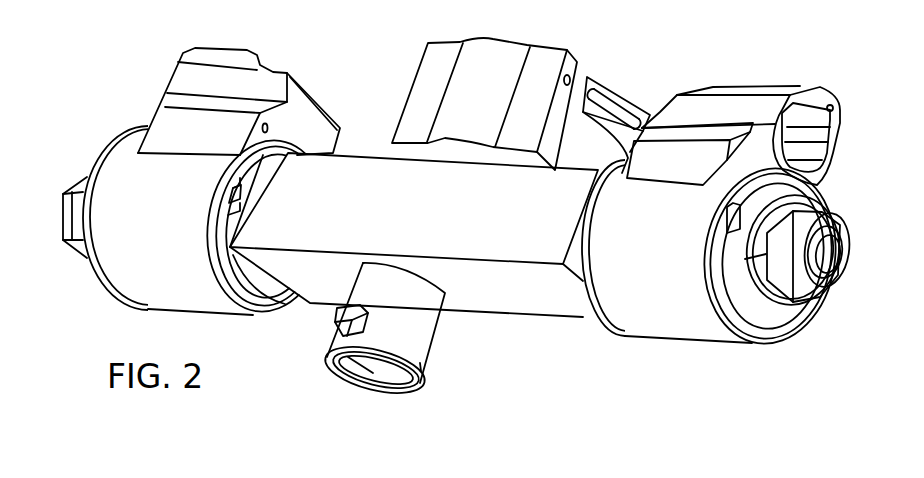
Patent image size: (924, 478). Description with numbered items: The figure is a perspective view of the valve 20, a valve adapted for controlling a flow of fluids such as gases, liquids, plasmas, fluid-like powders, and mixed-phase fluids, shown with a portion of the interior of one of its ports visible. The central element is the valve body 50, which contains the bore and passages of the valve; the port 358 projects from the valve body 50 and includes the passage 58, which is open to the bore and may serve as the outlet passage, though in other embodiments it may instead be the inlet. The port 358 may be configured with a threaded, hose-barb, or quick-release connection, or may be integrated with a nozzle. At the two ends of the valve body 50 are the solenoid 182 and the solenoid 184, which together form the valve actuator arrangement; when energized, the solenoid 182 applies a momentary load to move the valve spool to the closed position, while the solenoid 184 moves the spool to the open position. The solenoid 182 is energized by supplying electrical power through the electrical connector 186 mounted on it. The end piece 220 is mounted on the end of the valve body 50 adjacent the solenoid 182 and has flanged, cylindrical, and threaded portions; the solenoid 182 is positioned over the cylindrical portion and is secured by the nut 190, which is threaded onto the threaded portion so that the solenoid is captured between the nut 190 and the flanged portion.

The valve 20 is at (141, 25).
The valve body 50 is at (416, 46).
The passage 58 is at (365, 370).
The port 358 is at (340, 358).
The solenoid 182 is at (679, 344).
The solenoid 184 is at (272, 58).
The electrical connector 186 is at (807, 150).
The nut 190 is at (798, 297).
The end piece 220 is at (832, 270).